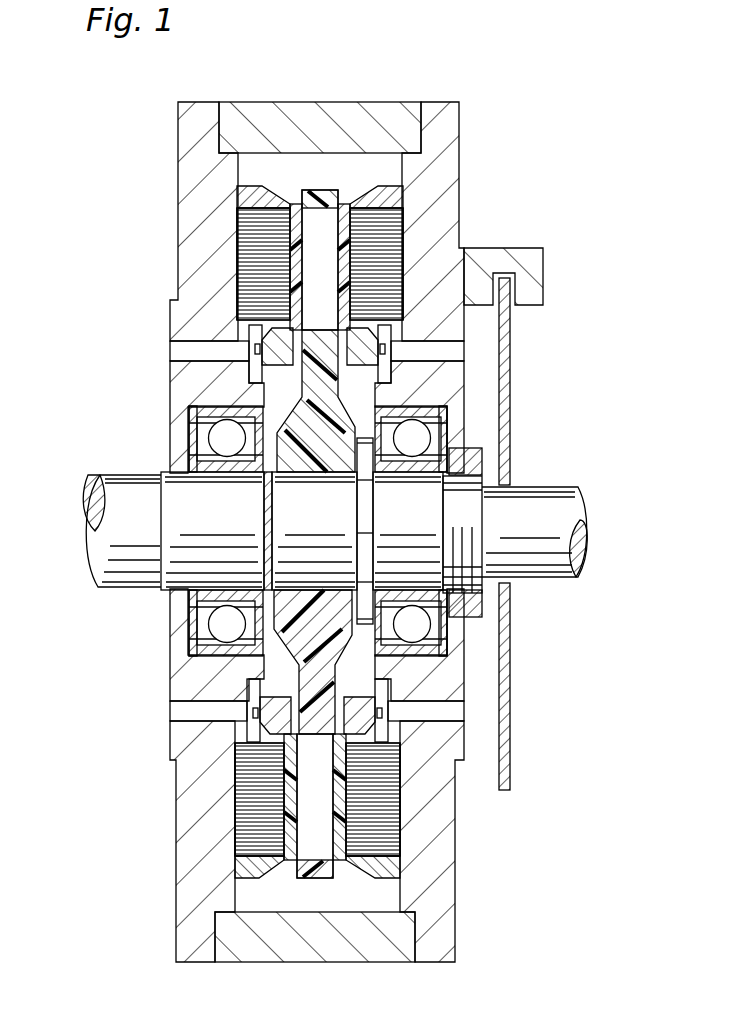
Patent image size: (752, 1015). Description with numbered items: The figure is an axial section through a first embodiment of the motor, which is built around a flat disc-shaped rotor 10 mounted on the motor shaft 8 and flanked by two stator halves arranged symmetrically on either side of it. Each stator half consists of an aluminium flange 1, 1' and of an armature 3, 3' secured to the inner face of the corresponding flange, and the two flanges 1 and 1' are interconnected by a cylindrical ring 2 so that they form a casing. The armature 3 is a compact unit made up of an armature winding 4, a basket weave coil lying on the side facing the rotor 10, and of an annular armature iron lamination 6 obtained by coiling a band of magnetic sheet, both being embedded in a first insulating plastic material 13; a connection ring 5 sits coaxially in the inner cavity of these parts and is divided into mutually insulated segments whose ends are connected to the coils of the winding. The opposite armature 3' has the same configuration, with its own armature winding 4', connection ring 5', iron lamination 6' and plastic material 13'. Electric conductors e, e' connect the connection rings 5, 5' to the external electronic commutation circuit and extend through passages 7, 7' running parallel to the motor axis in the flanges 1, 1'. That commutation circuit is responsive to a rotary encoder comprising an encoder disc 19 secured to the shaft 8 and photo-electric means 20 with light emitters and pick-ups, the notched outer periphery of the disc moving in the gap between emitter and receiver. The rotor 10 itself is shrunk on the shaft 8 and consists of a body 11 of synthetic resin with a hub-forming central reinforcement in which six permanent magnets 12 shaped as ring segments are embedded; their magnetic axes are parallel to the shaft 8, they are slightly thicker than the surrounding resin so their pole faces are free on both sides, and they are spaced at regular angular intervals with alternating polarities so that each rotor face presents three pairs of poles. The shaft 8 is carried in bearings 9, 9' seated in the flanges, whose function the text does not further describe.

The aluminium flange 1 is at (254, 529).
The aluminium flange 1' is at (419, 491).
The cylindrical ring 2 is at (337, 122).
The armature 3 is at (194, 532).
The armature 3' is at (443, 513).
The armature winding 4 is at (176, 502).
The first insulating plastic material 13 is at (262, 532).
The armature winding 4' is at (472, 482).
The first insulating plastic material 13' is at (374, 532).
The connection ring 5 is at (174, 515).
The connection ring 5' is at (487, 529).
The armature iron lamination 6 is at (162, 532).
The armature iron lamination 6' is at (477, 526).
The passage 7 is at (221, 531).
The passage 7' is at (472, 531).
The motor shaft 8 is at (117, 566).
The bearing 9 is at (175, 531).
The bearing 9' is at (505, 531).
The disc-shaped rotor 10 is at (323, 200).
The rotor body 11 is at (300, 650).
The permanent magnets 12 is at (316, 767).
The encoder disc 19 is at (504, 664).
The photo-electric means 20 is at (538, 254).
The electric conductor e is at (162, 530).
The electric conductor e' is at (493, 531).